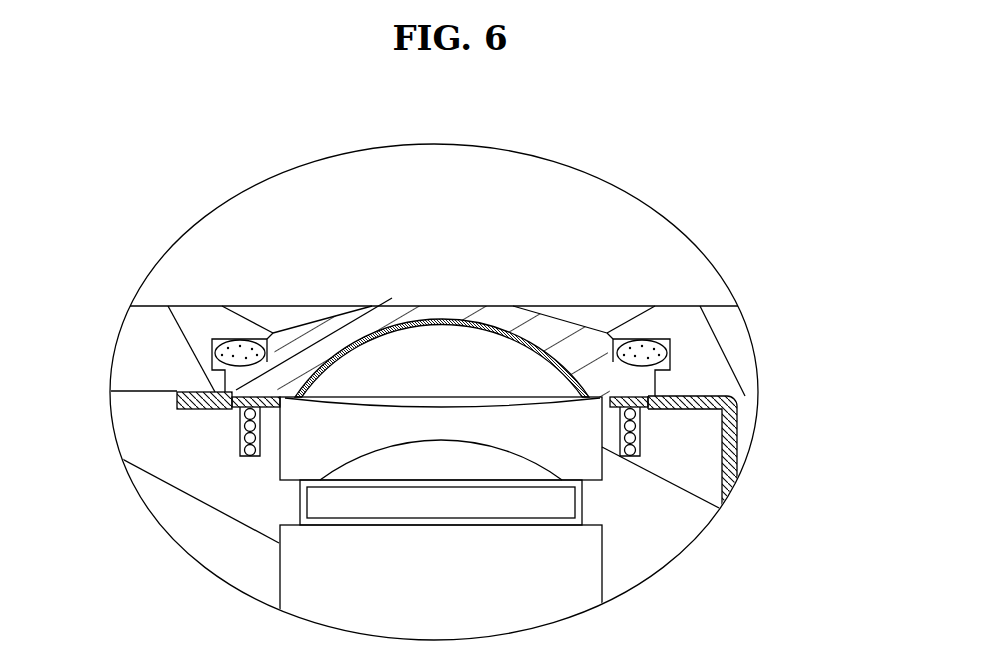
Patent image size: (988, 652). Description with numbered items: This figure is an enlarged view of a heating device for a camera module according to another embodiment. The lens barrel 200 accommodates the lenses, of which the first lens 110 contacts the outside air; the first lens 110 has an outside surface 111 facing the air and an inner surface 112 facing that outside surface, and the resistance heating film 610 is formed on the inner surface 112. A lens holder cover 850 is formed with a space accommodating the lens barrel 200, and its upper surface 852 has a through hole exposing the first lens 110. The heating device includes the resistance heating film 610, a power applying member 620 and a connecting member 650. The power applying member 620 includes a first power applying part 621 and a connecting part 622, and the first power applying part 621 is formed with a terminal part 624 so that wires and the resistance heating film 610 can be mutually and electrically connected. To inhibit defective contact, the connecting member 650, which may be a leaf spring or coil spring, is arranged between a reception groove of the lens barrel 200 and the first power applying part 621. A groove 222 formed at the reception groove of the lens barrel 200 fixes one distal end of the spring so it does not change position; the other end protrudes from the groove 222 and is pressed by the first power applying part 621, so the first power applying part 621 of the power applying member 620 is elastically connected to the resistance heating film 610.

The first lens 110 is at (513, 295).
The outside surface 111 is at (417, 304).
The inner surface 112 is at (346, 348).
The lens holder cover 850 is at (735, 327).
The upper surface 852 is at (653, 320).
The power applying member 620 is at (753, 428).
The first power applying part 621 is at (688, 402).
The connecting part 622 is at (730, 457).
The terminal part 624 is at (178, 402).
The resistance heating film 610 is at (278, 430).
The groove 222 is at (242, 457).
The connecting member 650 is at (242, 433).
The lens barrel 200 is at (685, 520).